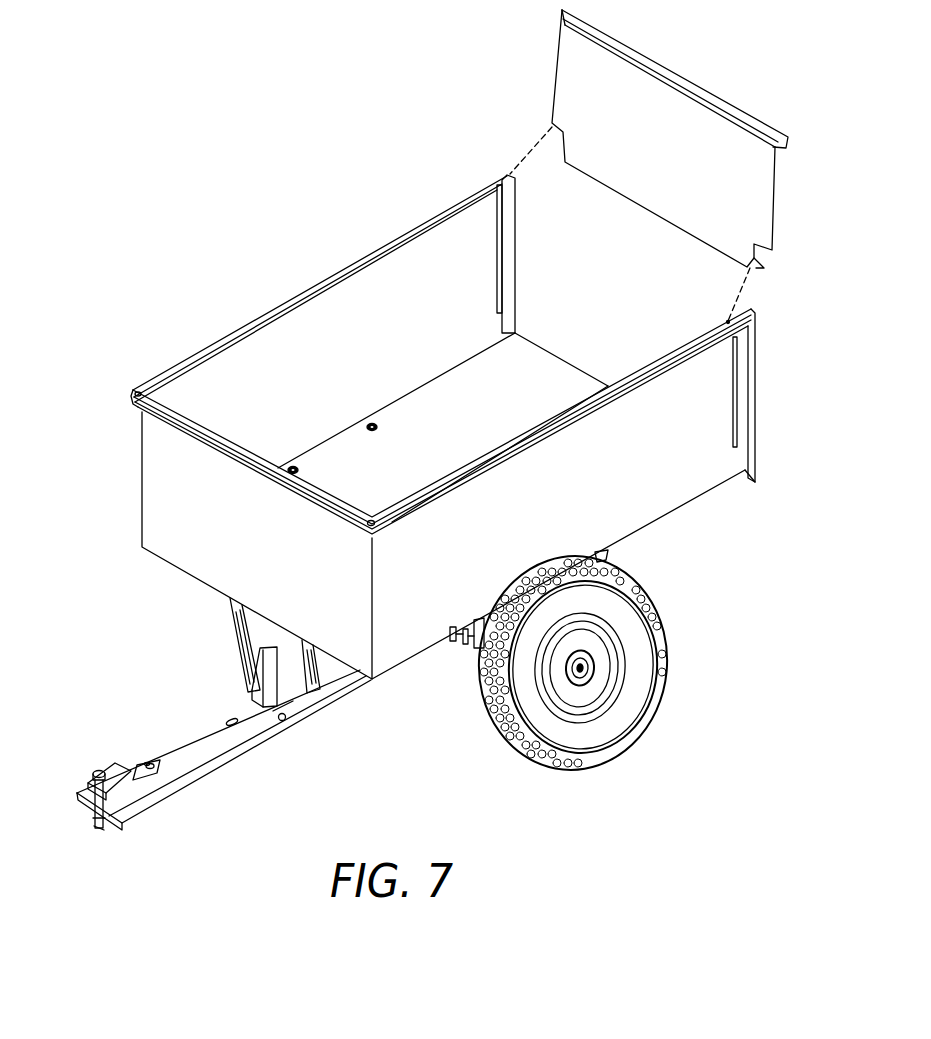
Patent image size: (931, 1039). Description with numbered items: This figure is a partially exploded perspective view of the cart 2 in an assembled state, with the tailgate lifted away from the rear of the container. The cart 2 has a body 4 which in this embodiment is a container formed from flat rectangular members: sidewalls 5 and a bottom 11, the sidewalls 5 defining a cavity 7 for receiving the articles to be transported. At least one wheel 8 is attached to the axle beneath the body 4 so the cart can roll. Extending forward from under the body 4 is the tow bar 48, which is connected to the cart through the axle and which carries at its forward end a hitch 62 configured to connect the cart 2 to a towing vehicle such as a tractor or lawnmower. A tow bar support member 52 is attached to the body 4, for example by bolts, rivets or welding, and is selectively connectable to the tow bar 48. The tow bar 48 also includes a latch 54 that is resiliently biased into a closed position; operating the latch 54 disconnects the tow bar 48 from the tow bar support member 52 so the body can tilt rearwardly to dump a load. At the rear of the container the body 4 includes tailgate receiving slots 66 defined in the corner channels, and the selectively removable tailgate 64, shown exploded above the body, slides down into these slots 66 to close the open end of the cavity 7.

The cart 2 is at (123, 249).
The body 4 is at (342, 302).
The sidewalls 5 is at (175, 495).
The cavity 7 is at (451, 396).
The wheel 8 is at (634, 617).
The bottom 11 is at (340, 455).
The tow bar 48 is at (202, 762).
The tow bar support member 52 is at (240, 640).
The latch 54 is at (255, 688).
The hitch 62 is at (107, 800).
The tailgate 64 is at (708, 152).
The tailgate receiving slots 66 is at (497, 248).